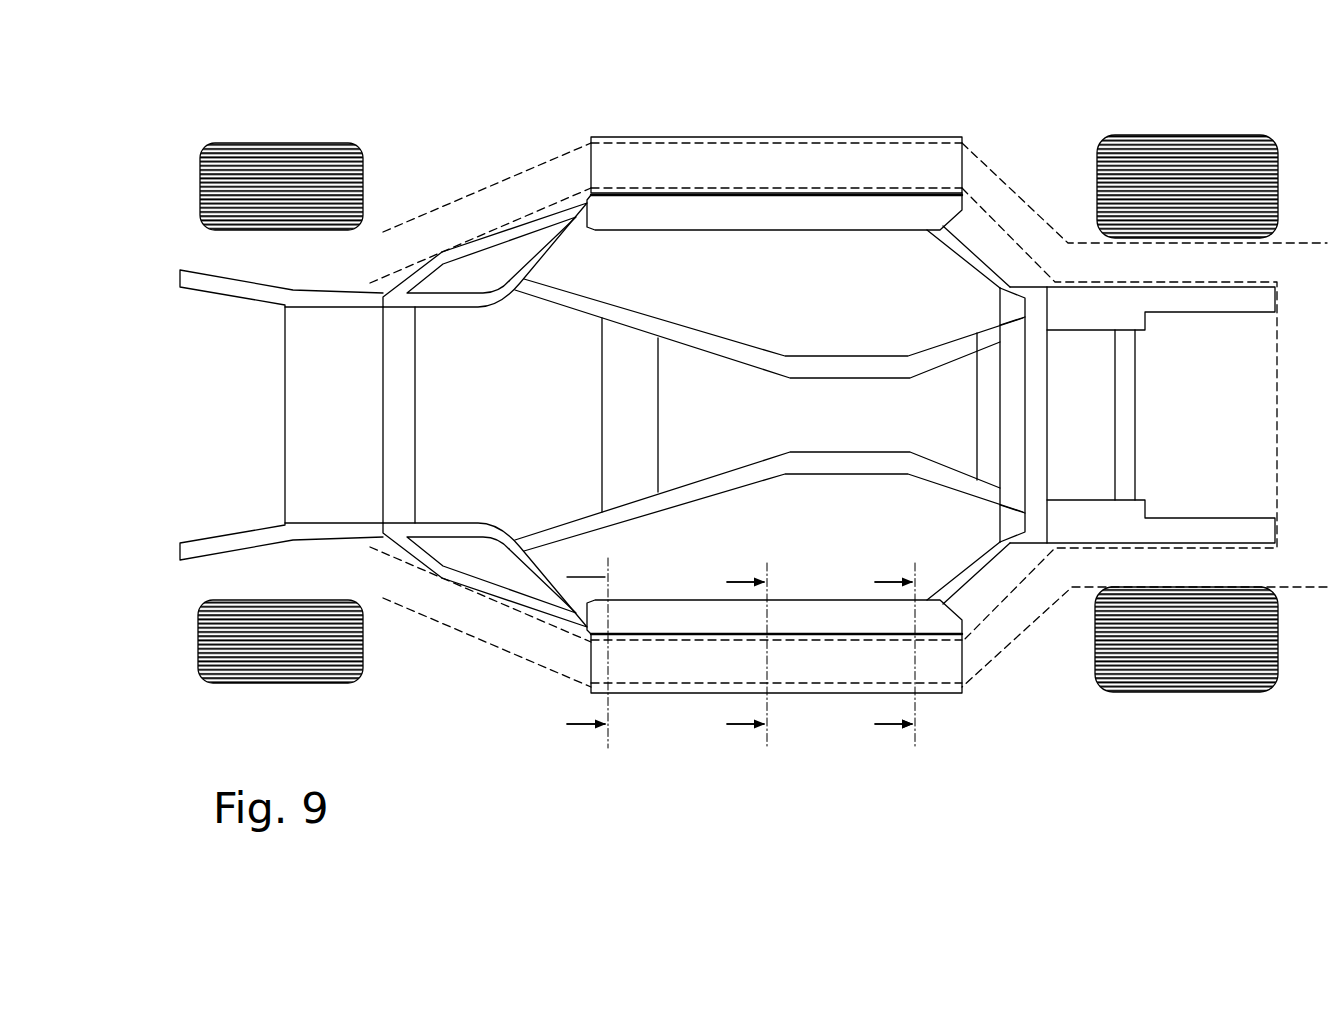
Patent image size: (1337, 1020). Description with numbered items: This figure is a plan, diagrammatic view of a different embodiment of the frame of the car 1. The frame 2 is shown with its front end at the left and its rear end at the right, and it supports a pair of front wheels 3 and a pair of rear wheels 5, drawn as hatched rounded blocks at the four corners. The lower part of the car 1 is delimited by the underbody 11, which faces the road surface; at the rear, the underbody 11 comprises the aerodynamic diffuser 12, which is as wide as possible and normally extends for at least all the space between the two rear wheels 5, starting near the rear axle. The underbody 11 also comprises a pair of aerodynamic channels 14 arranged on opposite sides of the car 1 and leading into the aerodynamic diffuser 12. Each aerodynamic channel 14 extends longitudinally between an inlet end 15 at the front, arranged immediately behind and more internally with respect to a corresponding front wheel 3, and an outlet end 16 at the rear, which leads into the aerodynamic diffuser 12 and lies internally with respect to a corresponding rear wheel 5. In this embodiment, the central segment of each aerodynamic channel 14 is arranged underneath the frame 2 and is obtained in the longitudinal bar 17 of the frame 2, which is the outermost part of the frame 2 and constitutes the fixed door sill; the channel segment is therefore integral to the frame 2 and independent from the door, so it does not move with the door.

The car 1 is at (1053, 777).
The frame 2 is at (740, 510).
The front wheels 3 is at (275, 183).
The rear wheels 5 is at (1189, 180).
The underbody 11 is at (774, 426).
The aerodynamic diffuser 12 is at (1297, 400).
The aerodynamic channels 14 is at (865, 150).
The inlet end 15 is at (371, 263).
The outlet end 16 is at (1288, 252).
The longitudinal bar 17 is at (727, 167).